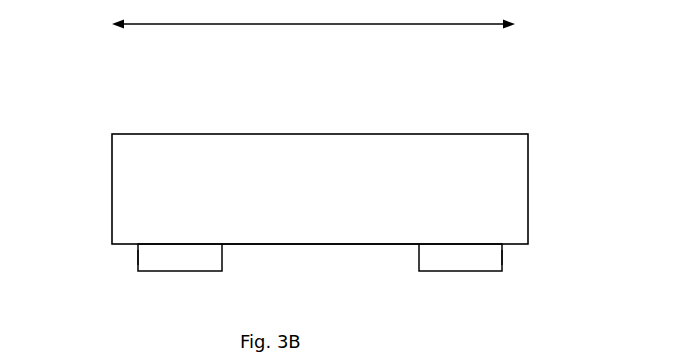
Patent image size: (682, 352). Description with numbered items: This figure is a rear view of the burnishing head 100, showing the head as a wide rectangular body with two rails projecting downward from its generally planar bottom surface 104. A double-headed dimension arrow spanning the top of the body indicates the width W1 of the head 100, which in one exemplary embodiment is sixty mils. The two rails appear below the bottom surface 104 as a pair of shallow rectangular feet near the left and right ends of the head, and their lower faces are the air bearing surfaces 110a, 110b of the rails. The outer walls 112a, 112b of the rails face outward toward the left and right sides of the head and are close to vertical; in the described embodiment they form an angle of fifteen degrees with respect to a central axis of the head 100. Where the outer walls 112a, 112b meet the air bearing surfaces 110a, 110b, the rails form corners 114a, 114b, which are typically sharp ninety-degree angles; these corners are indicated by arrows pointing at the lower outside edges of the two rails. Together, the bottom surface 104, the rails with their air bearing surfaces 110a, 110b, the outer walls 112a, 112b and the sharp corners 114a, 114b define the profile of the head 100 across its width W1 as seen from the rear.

The width W1 is at (278, 24).
The burnishing head 100 is at (322, 134).
The bottom surface 104 is at (293, 244).
The air bearing surface 110a is at (196, 271).
The air bearing surface 110b is at (445, 271).
The outer wall 112a is at (138, 254).
The outer wall 112b is at (503, 255).
The corner 114a is at (114, 289).
The corner 114b is at (525, 275).